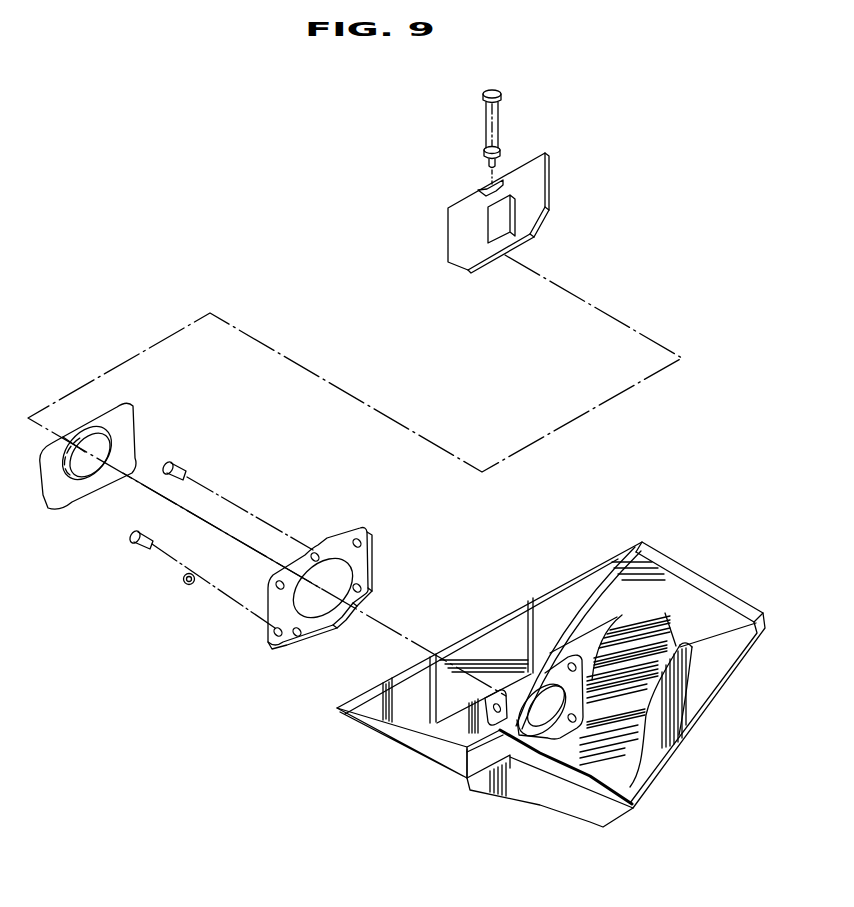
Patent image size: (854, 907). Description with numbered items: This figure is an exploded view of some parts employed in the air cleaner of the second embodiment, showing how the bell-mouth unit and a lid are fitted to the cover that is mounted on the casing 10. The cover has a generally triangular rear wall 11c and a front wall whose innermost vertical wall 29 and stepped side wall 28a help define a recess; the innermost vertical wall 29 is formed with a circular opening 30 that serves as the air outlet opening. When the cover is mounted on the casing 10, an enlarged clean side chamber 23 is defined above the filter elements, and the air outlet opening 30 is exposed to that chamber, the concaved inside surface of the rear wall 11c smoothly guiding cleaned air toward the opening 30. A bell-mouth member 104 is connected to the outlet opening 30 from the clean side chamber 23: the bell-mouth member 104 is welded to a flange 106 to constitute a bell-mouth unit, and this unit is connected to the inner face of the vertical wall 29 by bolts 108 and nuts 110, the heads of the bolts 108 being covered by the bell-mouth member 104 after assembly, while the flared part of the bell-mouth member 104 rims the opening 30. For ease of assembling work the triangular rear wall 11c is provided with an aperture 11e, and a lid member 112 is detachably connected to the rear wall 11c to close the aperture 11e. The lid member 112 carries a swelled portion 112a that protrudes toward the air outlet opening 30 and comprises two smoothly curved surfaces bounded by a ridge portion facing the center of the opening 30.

The casing 10 is at (676, 555).
The rear wall 11c is at (567, 594).
The aperture 11e is at (527, 630).
The clean side chamber 23 is at (463, 722).
The stepped side wall 28a is at (614, 701).
The innermost vertical wall 29 is at (558, 750).
The circular opening 30 is at (537, 723).
The bell-mouth member 104 is at (115, 407).
The flange 106 is at (327, 538).
The bolts 108 is at (150, 538).
The nuts 110 is at (192, 588).
The lid member 112 is at (548, 190).
The swelled portion 112a is at (500, 233).